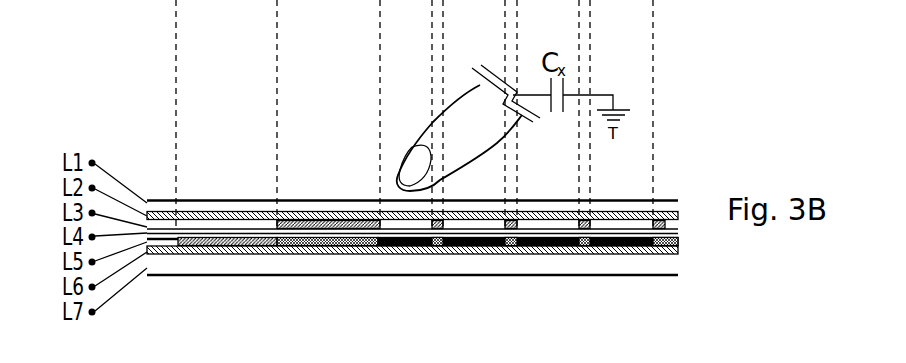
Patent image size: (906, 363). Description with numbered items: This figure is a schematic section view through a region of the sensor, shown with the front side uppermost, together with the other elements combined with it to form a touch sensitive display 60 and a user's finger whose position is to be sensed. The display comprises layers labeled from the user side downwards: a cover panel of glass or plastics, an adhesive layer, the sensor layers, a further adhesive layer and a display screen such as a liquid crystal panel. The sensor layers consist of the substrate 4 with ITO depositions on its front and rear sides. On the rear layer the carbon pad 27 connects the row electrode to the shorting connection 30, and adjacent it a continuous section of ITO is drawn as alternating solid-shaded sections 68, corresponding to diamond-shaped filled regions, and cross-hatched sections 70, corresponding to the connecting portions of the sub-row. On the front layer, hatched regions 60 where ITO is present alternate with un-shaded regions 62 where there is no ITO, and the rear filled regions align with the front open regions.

The substrate 4 is at (680, 236).
The carbon pad 27 is at (207, 238).
The shorting connection 30 is at (166, 233).
The touch sensitive display 60 is at (337, 212).
The un-shaded regions 62 is at (397, 217).
The solid-shaded sections 68 is at (400, 247).
The cross-hatched sections 70 is at (345, 253).